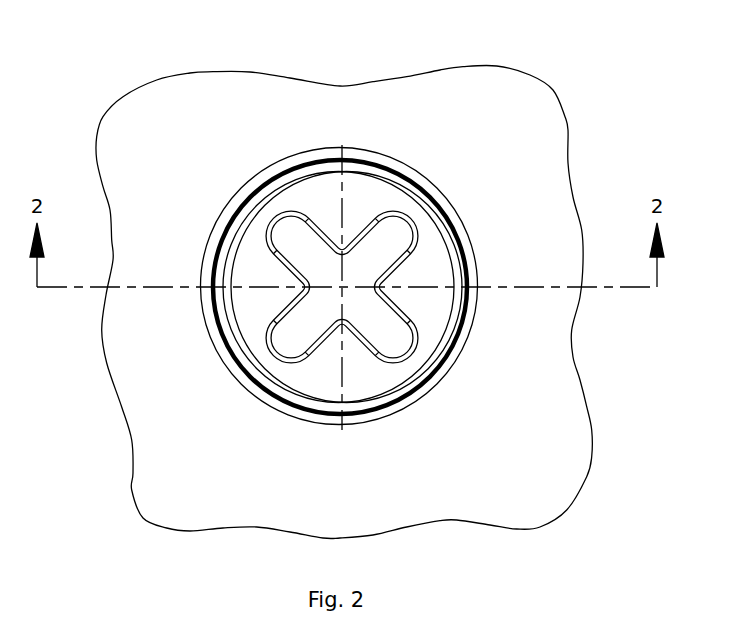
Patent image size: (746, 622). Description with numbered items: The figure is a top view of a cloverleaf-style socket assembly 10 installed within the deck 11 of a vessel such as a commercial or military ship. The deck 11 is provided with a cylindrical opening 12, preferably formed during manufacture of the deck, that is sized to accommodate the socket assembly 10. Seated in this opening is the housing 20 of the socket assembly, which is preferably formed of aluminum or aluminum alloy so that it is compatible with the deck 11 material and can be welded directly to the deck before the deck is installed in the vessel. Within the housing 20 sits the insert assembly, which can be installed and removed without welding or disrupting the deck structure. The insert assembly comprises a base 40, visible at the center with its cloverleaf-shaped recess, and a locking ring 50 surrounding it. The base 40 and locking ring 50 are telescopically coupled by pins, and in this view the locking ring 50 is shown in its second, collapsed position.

The socket assembly 10 is at (366, 195).
The deck 11 is at (538, 463).
The cylindrical opening 12 is at (450, 373).
The housing 20 is at (472, 257).
The base 40 is at (431, 271).
The locking ring 50 is at (456, 327).